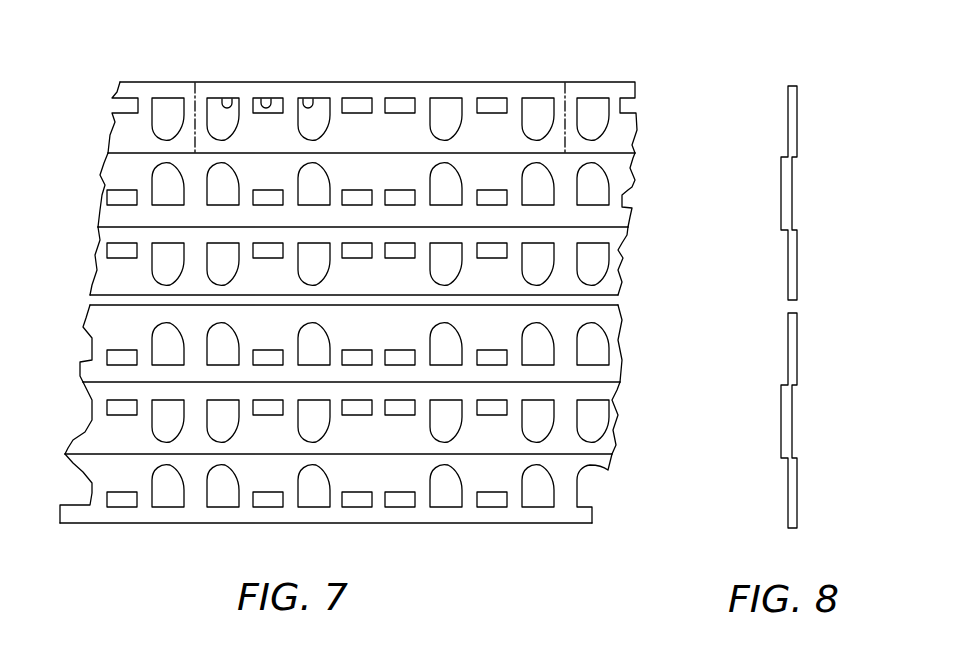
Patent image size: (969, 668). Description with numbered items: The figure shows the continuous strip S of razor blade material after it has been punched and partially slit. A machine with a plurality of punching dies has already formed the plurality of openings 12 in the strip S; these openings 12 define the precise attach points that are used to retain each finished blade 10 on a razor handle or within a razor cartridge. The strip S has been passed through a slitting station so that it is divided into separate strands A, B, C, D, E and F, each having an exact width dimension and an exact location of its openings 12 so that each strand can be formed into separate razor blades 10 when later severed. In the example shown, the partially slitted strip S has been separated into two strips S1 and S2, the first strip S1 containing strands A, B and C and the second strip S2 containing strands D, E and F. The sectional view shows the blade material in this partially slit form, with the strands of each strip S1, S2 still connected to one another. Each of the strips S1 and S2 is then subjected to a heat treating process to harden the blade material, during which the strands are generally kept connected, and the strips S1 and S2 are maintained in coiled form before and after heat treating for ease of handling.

In FIG. 7, the continuous strip S is at (117, 85).
In FIG. 7, the first strip S1 is at (632, 187).
In FIG. 8, the first strip S1 is at (795, 120).
In FIG. 7, the second strip S2 is at (613, 428).
In FIG. 8, the second strip S2 is at (793, 503).
In FIG. 7, the strand A is at (110, 138).
In FIG. 7, the strand B is at (103, 177).
In FIG. 7, the strand C is at (90, 275).
In FIG. 7, the strand D is at (85, 332).
In FIG. 7, the strand E is at (88, 420).
In FIG. 7, the strand F is at (85, 477).
In FIG. 7, the blade 10 is at (382, 125).
In FIG. 7, the openings 12 is at (308, 99).